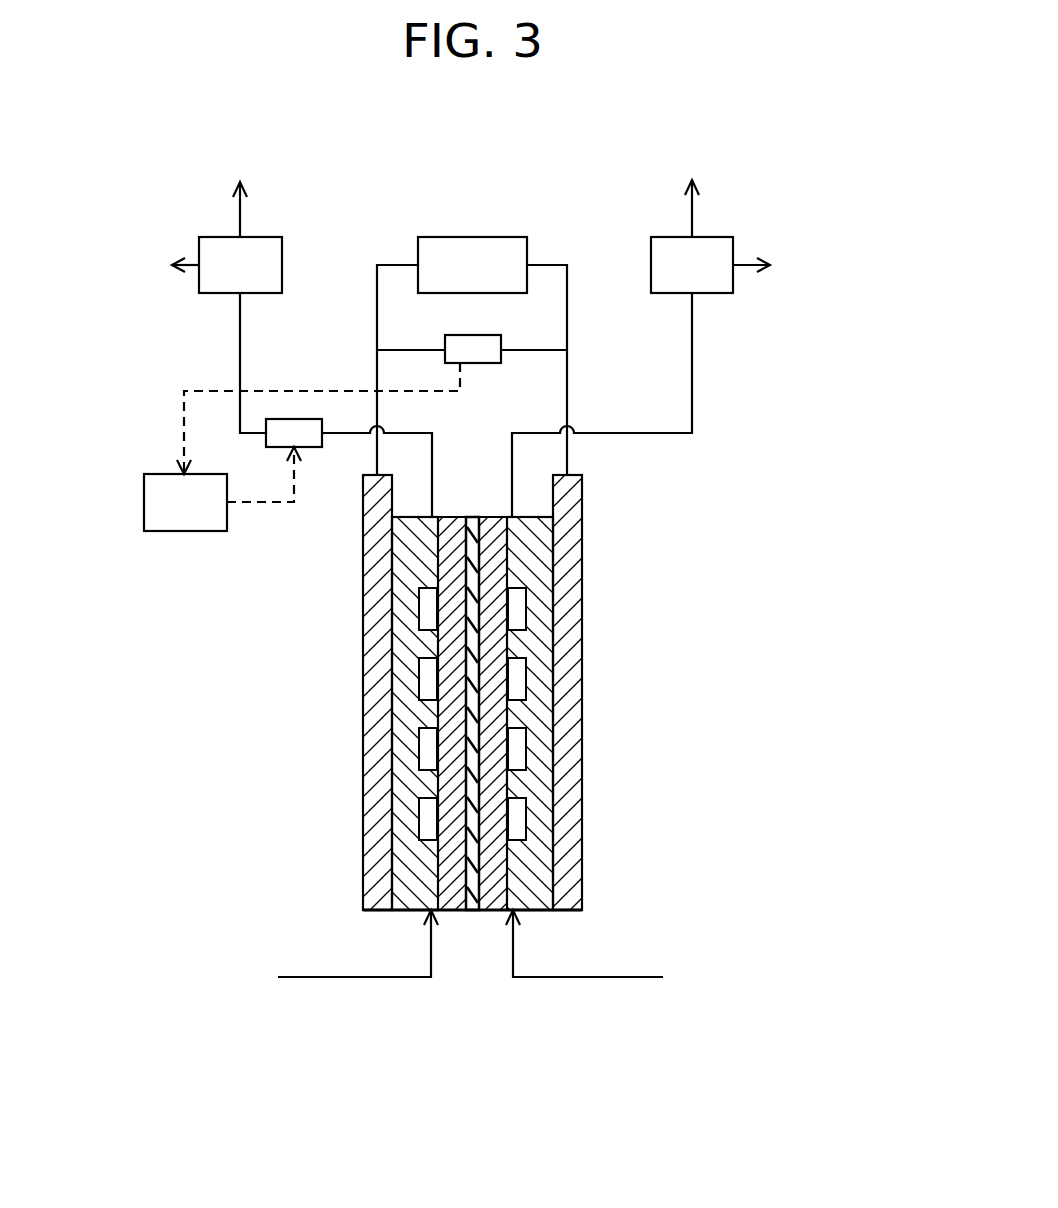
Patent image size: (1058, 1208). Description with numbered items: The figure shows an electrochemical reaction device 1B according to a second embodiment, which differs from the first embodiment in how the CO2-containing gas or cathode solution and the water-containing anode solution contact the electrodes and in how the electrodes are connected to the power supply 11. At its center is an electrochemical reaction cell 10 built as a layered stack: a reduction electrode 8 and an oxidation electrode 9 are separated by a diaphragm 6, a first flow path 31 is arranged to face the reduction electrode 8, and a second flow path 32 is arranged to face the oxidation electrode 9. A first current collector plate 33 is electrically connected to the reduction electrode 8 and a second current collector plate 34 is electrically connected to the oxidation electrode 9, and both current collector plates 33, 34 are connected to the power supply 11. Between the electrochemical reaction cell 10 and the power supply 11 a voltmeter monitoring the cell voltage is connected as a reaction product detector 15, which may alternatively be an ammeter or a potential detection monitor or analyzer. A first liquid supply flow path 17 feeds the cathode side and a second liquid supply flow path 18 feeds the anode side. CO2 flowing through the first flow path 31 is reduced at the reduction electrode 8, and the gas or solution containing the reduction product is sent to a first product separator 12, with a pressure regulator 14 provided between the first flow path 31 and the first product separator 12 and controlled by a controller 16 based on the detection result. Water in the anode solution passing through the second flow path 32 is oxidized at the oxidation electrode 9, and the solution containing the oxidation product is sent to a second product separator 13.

The electrochemical reaction device 1B is at (582, 183).
The diaphragm 6 is at (474, 545).
The reduction electrode 8 is at (452, 640).
The oxidation electrode 9 is at (495, 640).
The electrochemical reaction cell 10 is at (474, 932).
The power supply 11 is at (432, 237).
The first product separator 12 is at (206, 237).
The second product separator 13 is at (726, 237).
The pressure regulator 14 is at (312, 447).
The reaction product detector 15 is at (495, 363).
The controller 16 is at (144, 502).
The first liquid supply flow path 17 is at (361, 977).
The second liquid supply flow path 18 is at (579, 977).
The first flow path 31 is at (428, 743).
The second flow path 32 is at (510, 742).
The first current collector plate 33 is at (378, 838).
The second current collector plate 34 is at (568, 836).